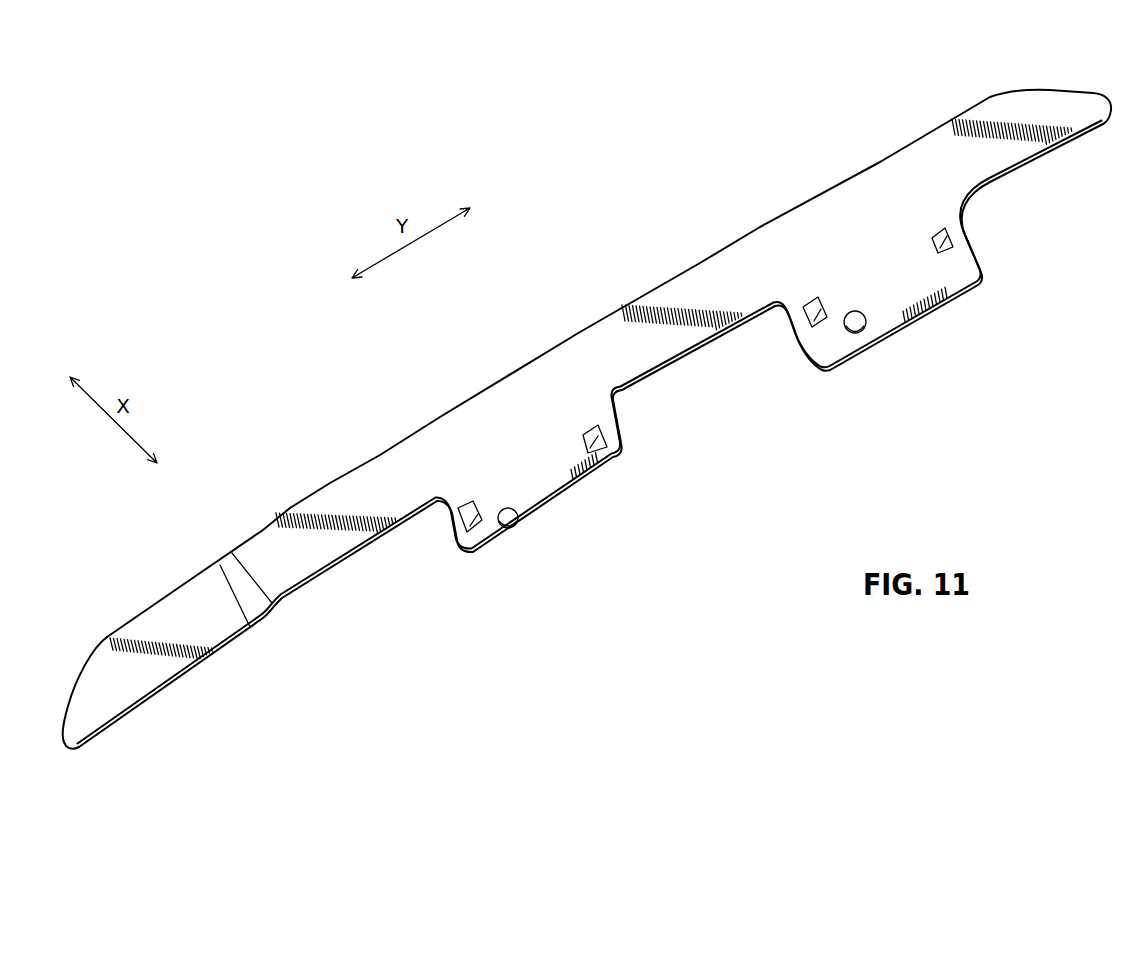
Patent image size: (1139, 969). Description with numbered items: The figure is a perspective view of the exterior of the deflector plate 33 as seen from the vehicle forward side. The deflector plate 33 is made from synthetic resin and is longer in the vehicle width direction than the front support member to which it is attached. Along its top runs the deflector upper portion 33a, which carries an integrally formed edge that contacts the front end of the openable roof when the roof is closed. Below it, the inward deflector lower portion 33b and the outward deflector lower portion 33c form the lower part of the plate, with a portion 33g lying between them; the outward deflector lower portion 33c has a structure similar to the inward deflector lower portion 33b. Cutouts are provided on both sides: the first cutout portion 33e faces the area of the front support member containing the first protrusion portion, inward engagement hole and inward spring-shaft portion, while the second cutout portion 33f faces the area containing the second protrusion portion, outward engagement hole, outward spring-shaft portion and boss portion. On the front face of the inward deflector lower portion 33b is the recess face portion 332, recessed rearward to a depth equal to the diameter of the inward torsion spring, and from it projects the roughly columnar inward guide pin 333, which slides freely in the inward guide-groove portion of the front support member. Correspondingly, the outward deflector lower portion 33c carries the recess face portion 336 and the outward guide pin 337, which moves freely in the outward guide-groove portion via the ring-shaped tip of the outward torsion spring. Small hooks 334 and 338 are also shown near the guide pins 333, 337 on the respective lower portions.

The deflector plate 33 is at (753, 133).
The deflector upper portion 33a is at (362, 487).
The inward deflector lower portion 33b is at (980, 263).
The outward deflector lower portion 33c is at (455, 553).
The first cutout portion 33e is at (1046, 224).
The second cutout portion 33f is at (690, 416).
The intermediate portion 33g is at (346, 616).
The recess face portion 332 is at (960, 283).
The inward guide pin 333 is at (858, 336).
The hook 334 is at (795, 309).
The recess face portion 336 is at (628, 456).
The outward guide pin 337 is at (493, 530).
The hook 338 is at (443, 498).